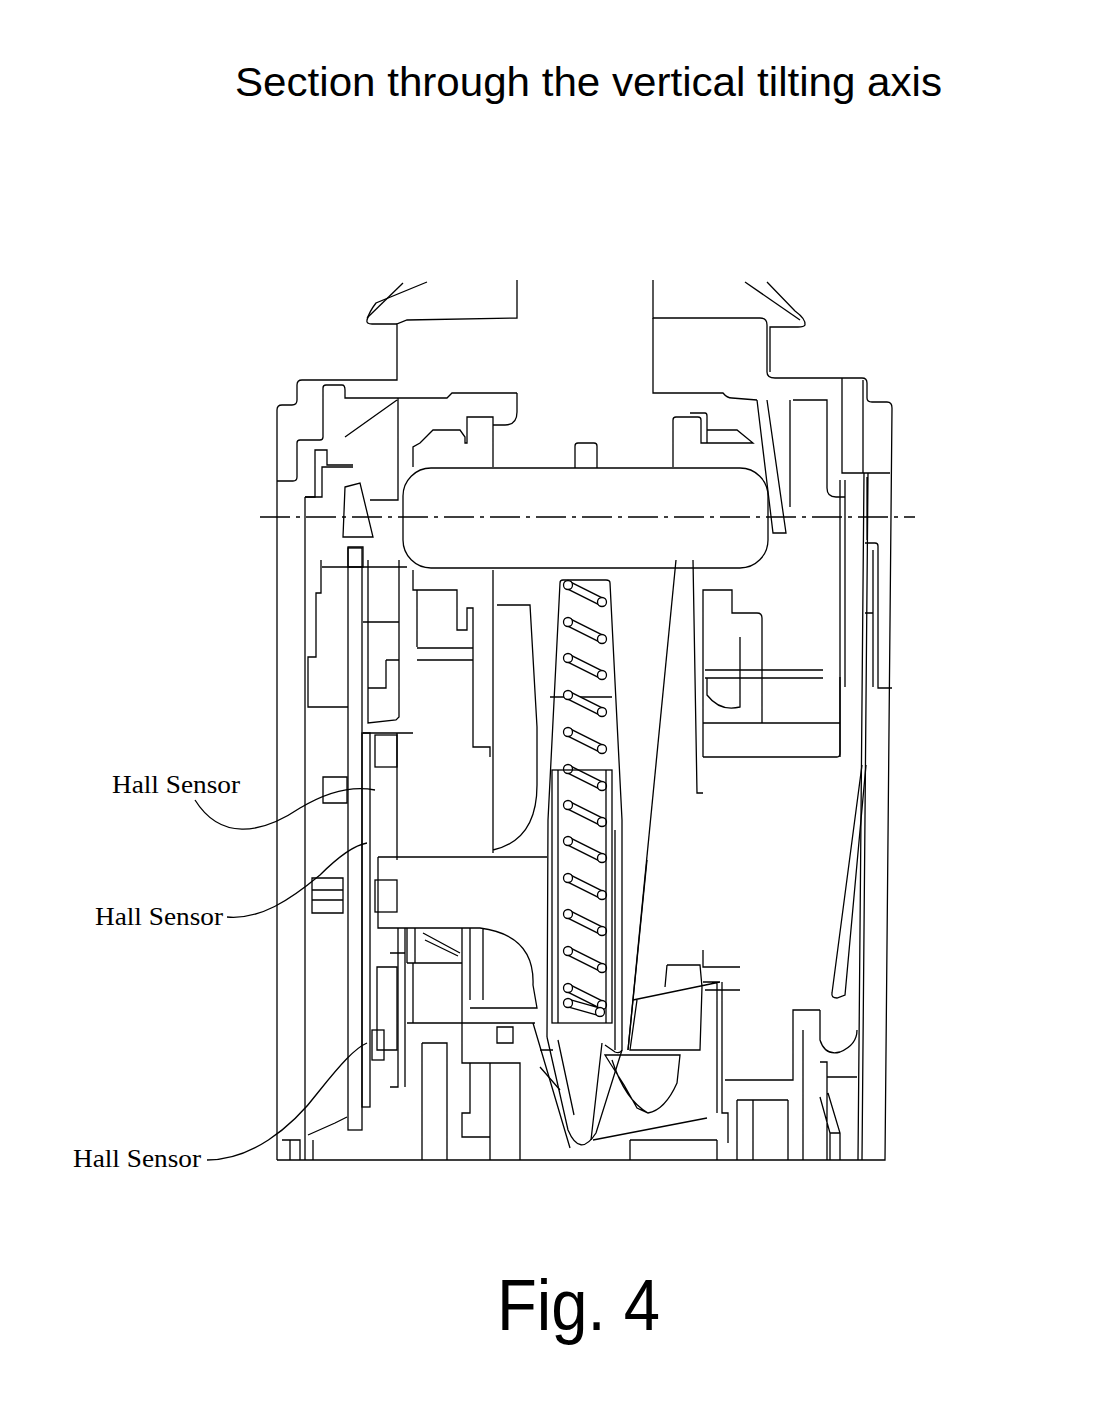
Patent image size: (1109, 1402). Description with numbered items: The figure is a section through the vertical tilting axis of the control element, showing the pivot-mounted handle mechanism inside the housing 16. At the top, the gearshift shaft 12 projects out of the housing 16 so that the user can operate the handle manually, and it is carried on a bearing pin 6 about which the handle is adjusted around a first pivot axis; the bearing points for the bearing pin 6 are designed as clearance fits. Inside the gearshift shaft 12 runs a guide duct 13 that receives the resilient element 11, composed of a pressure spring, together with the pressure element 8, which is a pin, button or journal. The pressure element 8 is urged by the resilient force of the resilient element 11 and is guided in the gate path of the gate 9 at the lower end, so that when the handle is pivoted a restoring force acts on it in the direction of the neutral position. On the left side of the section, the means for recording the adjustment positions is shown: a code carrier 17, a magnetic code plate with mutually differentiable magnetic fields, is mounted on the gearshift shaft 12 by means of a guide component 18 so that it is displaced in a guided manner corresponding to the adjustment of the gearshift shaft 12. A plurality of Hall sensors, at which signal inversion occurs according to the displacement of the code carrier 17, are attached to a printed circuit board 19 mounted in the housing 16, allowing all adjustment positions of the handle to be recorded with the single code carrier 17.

The bearing pin 6 is at (740, 490).
The pressure element 8 is at (578, 1098).
The gate 9 is at (655, 1080).
The resilient element 11 is at (593, 810).
The gearshift shaft 12 is at (535, 385).
The guide duct 13 is at (620, 725).
The housing 16 is at (276, 697).
The code carrier 17 is at (380, 793).
The guide component 18 is at (387, 894).
The printed circuit board 19 is at (350, 1018).